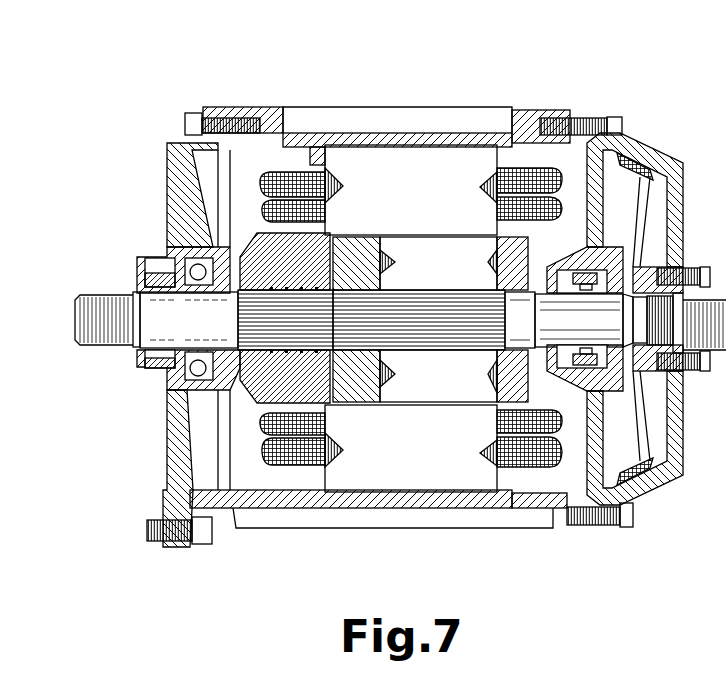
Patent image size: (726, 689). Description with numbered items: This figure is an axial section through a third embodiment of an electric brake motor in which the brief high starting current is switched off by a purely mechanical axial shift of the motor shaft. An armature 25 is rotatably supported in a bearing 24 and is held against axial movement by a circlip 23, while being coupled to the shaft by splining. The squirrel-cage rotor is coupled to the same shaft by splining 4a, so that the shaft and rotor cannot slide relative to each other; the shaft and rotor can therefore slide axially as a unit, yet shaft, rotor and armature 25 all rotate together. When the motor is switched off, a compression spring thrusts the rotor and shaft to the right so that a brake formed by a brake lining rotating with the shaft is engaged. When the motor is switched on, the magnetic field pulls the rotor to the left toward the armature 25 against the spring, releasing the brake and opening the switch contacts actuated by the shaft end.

The splining 4a is at (423, 290).
The circlip 23 is at (160, 382).
The bearing 24 is at (220, 250).
The armature 25 is at (260, 253).